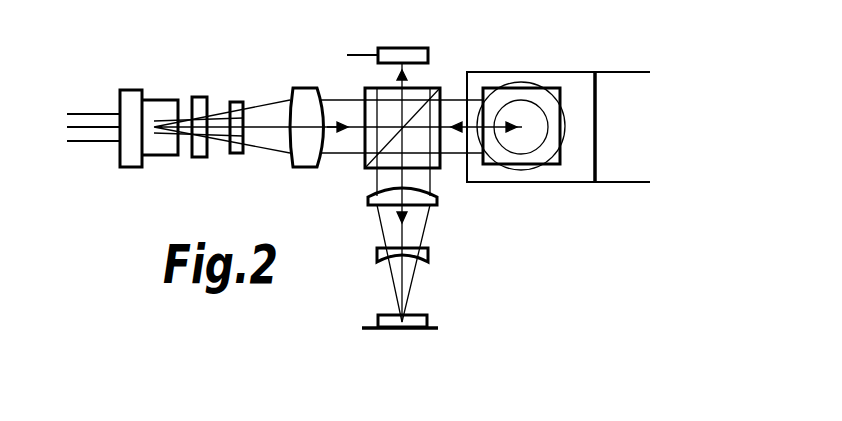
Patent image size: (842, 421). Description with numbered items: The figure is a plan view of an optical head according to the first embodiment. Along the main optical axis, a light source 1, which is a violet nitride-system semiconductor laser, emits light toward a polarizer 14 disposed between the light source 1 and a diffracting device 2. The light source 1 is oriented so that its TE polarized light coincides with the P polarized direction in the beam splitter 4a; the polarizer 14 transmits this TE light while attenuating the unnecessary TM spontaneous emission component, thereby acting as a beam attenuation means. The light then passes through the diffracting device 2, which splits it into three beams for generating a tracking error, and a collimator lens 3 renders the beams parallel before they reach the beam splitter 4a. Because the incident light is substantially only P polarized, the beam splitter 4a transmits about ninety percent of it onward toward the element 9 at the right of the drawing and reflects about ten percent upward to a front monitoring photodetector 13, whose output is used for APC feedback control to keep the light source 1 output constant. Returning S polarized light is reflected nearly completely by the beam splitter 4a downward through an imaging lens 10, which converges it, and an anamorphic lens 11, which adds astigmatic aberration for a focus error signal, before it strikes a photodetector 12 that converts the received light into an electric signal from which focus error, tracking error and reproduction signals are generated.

The light source 1 is at (162, 101).
The polarizer 14 is at (197, 158).
The diffracting device 2 is at (238, 101).
The collimator lens 3 is at (306, 87).
The beam splitter 4a is at (434, 87).
The front monitoring photodetector 13 is at (407, 49).
The objective lens unit 9 is at (593, 121).
The imaging lens 10 is at (368, 200).
The anamorphic lens 11 is at (377, 254).
The photodetector 12 is at (378, 320).